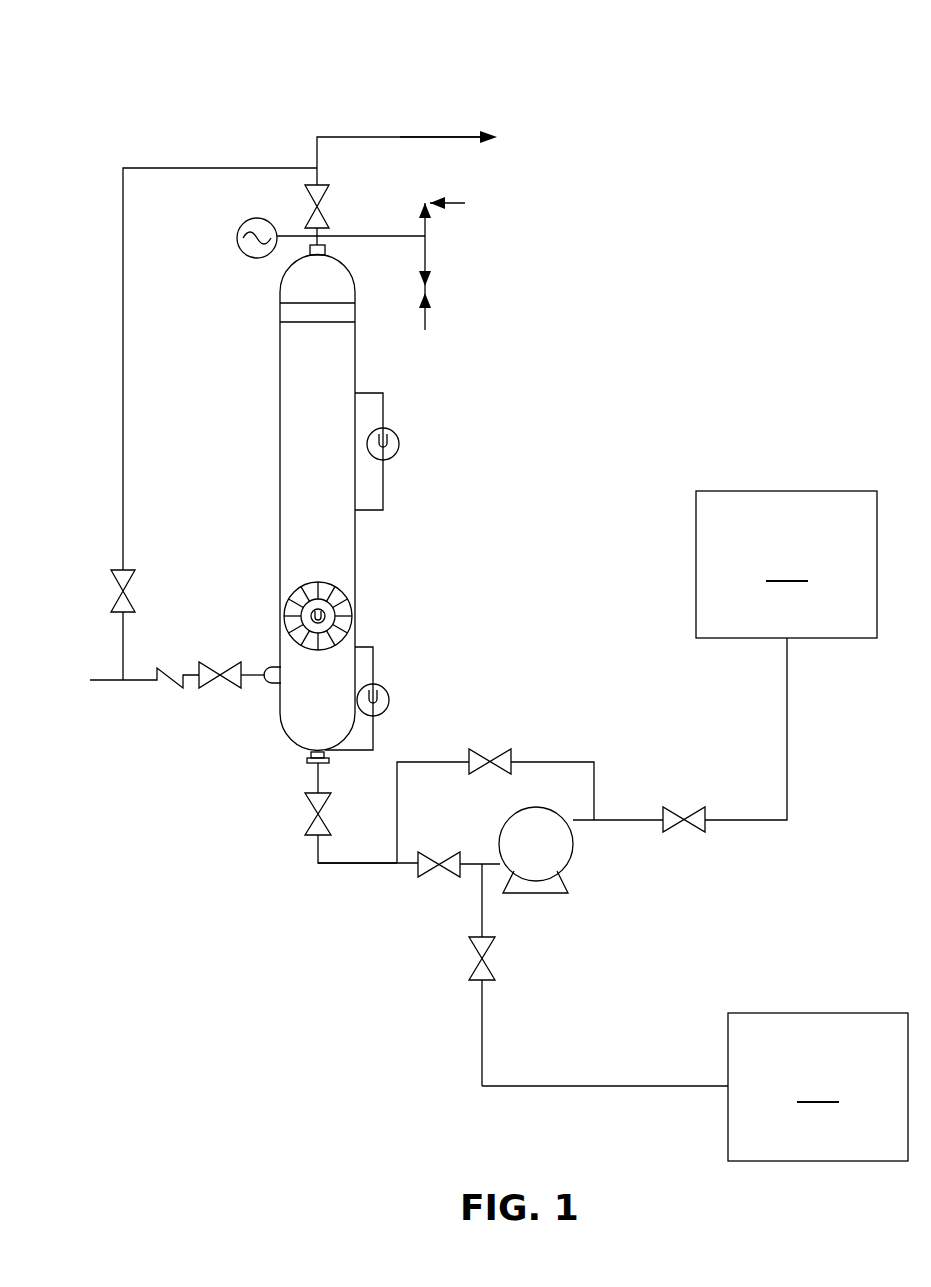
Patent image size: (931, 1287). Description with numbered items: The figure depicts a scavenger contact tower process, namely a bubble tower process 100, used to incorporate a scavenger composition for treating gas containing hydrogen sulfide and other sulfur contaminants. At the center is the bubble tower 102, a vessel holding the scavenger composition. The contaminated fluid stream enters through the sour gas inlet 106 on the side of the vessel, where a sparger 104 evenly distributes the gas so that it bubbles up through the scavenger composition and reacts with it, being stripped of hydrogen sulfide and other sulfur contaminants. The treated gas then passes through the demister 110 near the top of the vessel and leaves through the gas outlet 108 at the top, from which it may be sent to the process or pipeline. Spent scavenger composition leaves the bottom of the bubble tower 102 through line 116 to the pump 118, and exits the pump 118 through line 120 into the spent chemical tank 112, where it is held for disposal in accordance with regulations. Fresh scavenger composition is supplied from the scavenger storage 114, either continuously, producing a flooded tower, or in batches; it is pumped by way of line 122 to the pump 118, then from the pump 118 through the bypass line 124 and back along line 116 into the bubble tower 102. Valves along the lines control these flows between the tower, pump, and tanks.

The bubble tower process 100 is at (756, 47).
The bubble tower 102 is at (355, 552).
The sparger 104 is at (337, 657).
The sour gas inlet 106 is at (228, 690).
The gas outlet 108 is at (433, 136).
The demister 110 is at (281, 312).
The spent chemical tank 112 is at (786, 564).
The scavenger storage 114 is at (818, 1087).
The line 116 is at (358, 865).
The pump 118 is at (570, 857).
The line 120 is at (627, 818).
The line 122 is at (603, 1085).
The bypass line 124 is at (500, 750).